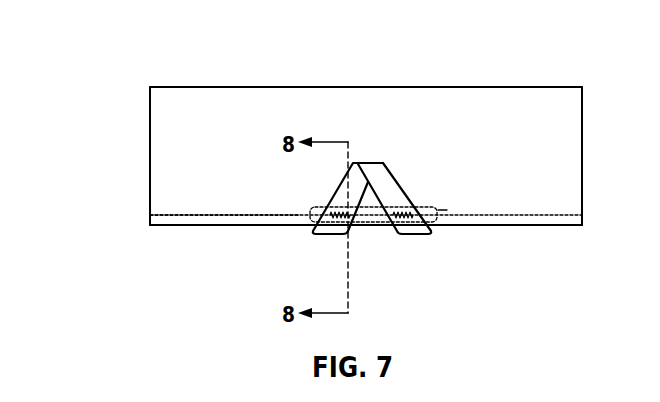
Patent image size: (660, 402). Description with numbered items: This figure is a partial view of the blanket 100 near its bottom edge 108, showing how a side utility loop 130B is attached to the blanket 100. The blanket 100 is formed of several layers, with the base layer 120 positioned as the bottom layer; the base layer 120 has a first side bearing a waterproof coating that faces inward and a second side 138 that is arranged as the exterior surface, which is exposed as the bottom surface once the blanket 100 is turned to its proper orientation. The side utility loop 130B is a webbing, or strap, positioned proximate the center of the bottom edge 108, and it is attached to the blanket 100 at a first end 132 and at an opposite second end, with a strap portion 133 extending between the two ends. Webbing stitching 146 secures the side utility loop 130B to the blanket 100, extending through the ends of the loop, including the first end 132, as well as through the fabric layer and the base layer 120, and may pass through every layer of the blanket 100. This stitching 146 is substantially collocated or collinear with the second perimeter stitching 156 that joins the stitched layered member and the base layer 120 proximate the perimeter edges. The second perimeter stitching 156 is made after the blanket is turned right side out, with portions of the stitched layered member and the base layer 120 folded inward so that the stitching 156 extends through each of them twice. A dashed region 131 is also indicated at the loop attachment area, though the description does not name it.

The blanket 100 is at (167, 31).
The base layer 120 is at (202, 131).
The bottom edge 108 is at (210, 226).
The second side 138 is at (230, 215).
The second perimeter stitching 156 is at (175, 215).
The first end 132 is at (447, 210).
The mounting portion 131 is at (318, 211).
The webbing stitching 146 is at (403, 217).
The side utility loop 130B is at (415, 141).
The strap portion 133 is at (397, 197).